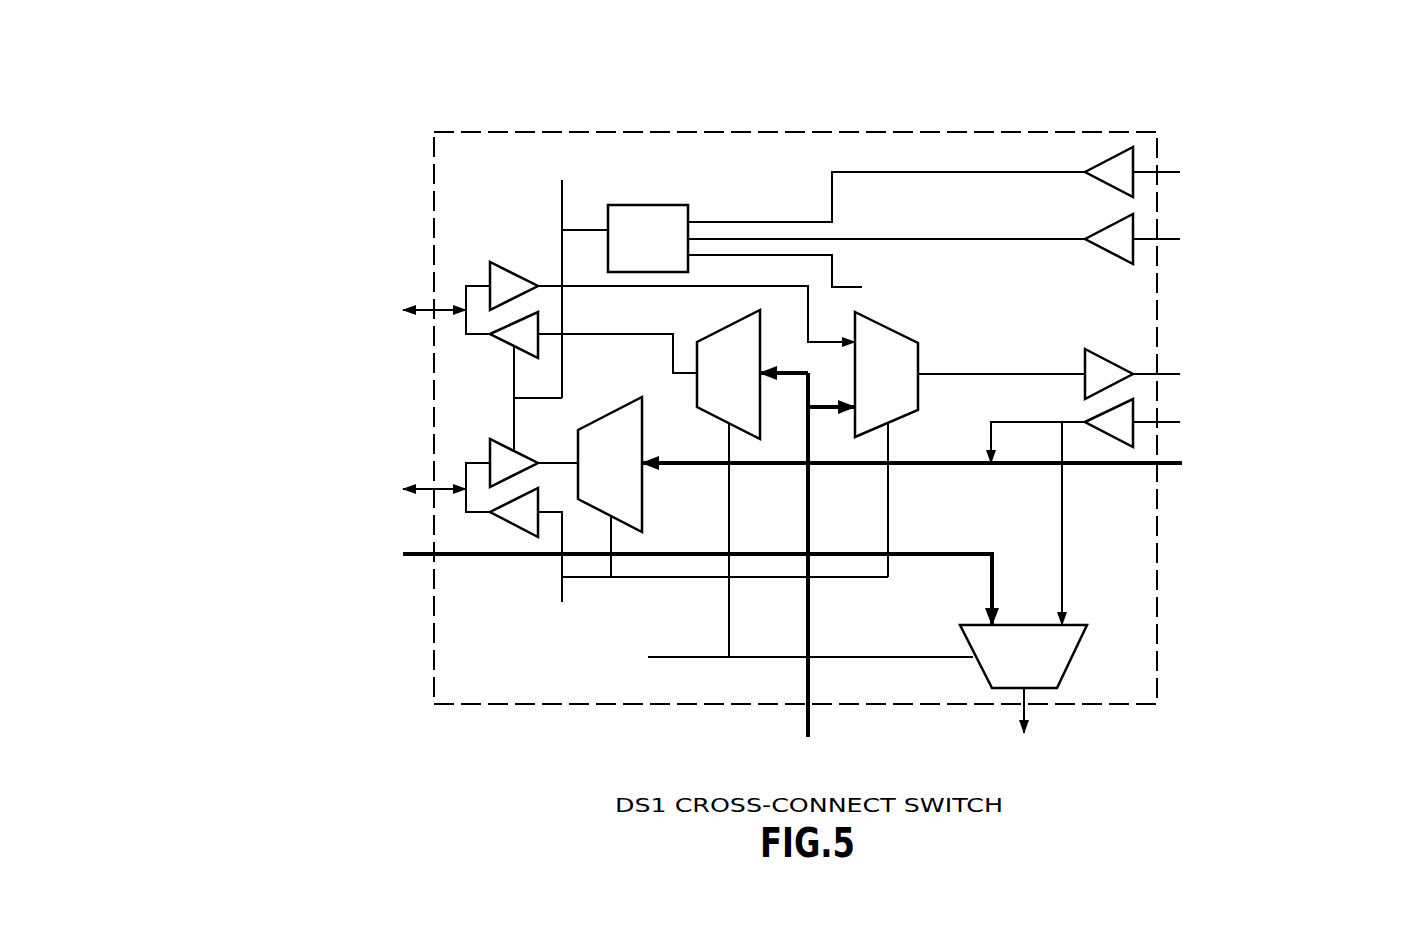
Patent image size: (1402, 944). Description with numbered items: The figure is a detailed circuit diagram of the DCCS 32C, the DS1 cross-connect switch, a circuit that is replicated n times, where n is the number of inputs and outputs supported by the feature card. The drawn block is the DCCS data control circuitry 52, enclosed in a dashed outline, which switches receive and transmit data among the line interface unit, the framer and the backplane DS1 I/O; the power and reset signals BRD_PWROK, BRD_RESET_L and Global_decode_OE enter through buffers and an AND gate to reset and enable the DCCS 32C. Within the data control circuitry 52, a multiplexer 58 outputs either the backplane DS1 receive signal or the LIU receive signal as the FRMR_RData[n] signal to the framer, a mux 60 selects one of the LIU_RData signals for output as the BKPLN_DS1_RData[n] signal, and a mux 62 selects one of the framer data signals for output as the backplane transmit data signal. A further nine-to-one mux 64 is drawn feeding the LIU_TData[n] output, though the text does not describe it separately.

The DCCS 32C is at (1218, 97).
The data control circuitry 52 is at (1067, 131).
The multiplexer 58 is at (920, 355).
The mux 60 is at (742, 320).
The mux 62 is at (606, 417).
The 9:1 multiplexer 64 is at (1075, 661).